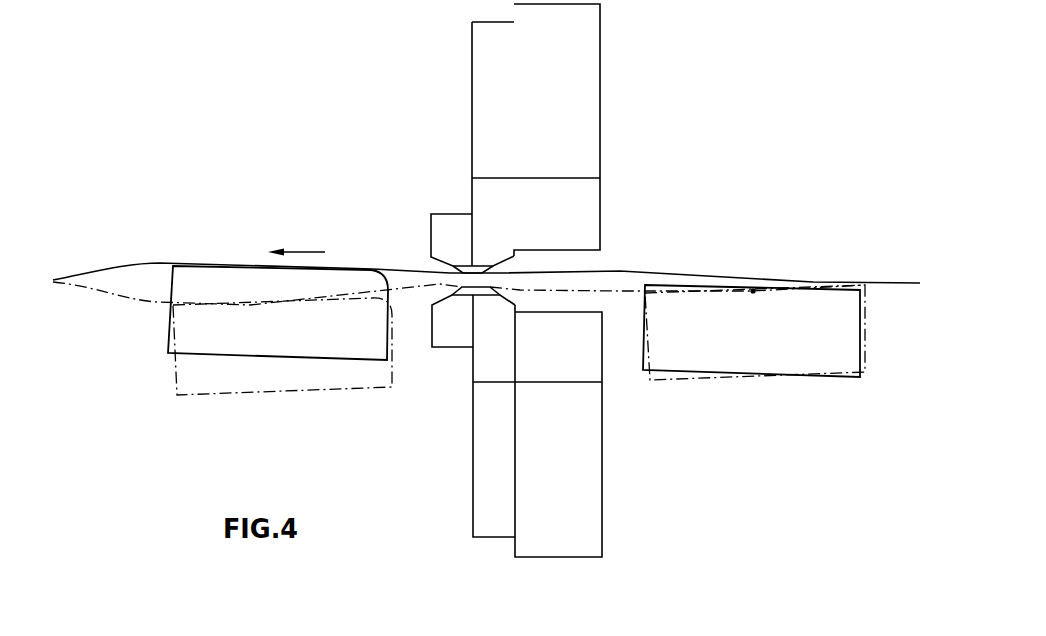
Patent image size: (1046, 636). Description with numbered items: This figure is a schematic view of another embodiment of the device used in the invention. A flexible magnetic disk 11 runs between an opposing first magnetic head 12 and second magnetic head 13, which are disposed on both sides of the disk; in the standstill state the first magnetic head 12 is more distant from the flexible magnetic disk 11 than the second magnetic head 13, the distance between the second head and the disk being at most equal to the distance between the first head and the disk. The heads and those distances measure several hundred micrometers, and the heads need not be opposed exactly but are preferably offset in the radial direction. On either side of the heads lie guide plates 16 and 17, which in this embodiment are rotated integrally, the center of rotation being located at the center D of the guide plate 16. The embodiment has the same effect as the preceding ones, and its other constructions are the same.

The flexible magnetic disk 11 is at (617, 270).
The first magnetic head 12 is at (462, 303).
The second magnetic head 13 is at (460, 257).
The guide plate 16 is at (758, 362).
The guide plate 17 is at (368, 347).
The center of the guide plate D is at (752, 294).